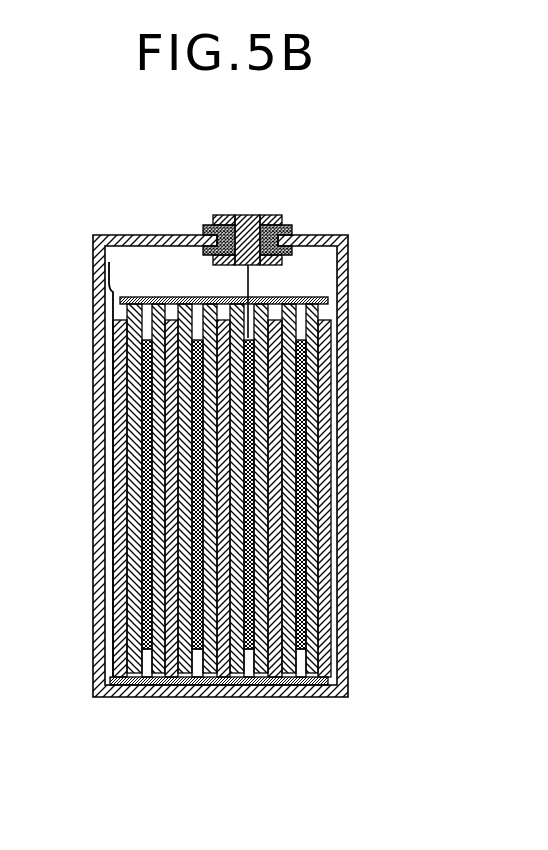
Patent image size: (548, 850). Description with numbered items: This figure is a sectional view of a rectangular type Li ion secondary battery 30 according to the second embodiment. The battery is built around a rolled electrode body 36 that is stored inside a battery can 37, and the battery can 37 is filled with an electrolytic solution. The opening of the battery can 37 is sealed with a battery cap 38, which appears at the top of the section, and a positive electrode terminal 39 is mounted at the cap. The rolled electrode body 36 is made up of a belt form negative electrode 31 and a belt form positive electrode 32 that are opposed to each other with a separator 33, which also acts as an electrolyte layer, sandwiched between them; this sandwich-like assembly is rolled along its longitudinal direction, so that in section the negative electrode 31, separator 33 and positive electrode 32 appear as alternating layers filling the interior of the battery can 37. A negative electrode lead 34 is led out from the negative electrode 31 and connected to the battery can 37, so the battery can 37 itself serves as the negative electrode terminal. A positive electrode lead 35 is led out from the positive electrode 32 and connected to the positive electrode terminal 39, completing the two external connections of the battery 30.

The Li ion secondary battery 30 is at (256, 421).
The negative electrode 31 is at (322, 541).
The positive electrode 32 is at (303, 601).
The separator 33 is at (312, 571).
The negative electrode lead 34 is at (93, 297).
The positive electrode lead 35 is at (252, 280).
The rolled electrode body 36 is at (295, 494).
The battery can 37 is at (348, 255).
The battery cap 38 is at (314, 235).
The positive electrode terminal 39 is at (250, 215).